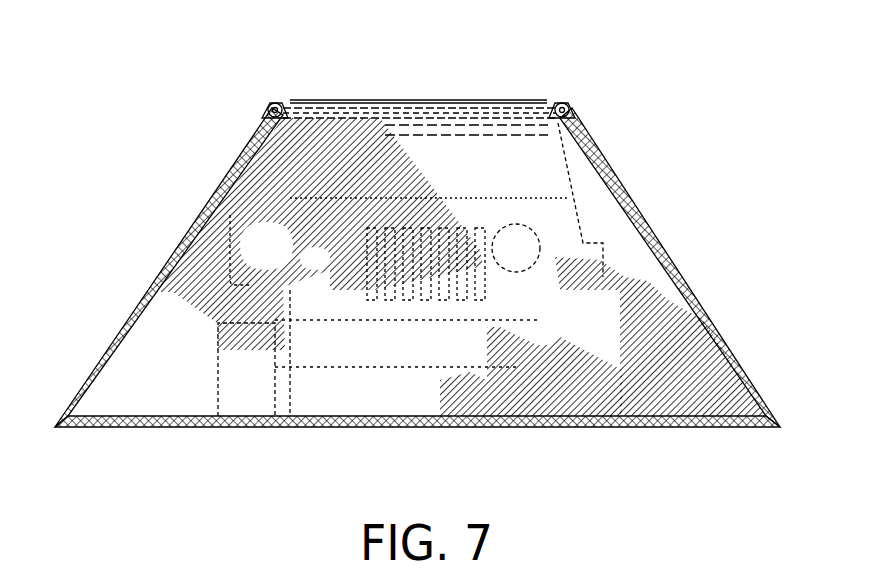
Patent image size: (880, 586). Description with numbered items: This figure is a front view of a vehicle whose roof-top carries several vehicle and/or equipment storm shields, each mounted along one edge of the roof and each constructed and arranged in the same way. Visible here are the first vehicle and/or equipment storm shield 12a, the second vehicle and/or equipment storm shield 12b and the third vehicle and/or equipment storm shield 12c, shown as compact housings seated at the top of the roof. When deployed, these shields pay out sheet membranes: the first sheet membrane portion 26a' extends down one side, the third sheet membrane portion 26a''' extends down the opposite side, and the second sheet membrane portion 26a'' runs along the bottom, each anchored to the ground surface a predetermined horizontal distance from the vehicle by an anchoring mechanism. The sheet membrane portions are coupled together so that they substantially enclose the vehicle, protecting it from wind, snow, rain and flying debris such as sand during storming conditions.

The first vehicle and/or equipment storm shield 12a is at (565, 100).
The second vehicle and/or equipment storm shield 12b is at (466, 100).
The third vehicle and/or equipment storm shield 12c is at (272, 100).
The first sheet membrane portion 26a' is at (670, 267).
The second sheet membrane portion 26a'' is at (417, 465).
The third sheet membrane portion 26a''' is at (169, 267).